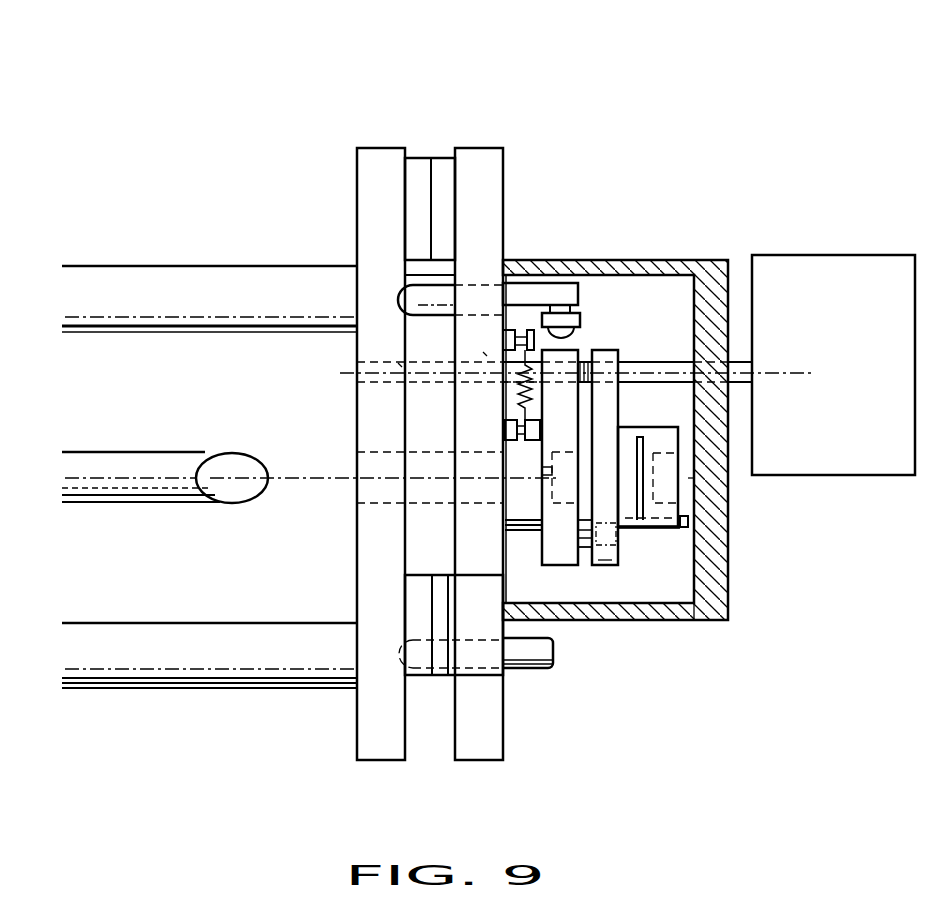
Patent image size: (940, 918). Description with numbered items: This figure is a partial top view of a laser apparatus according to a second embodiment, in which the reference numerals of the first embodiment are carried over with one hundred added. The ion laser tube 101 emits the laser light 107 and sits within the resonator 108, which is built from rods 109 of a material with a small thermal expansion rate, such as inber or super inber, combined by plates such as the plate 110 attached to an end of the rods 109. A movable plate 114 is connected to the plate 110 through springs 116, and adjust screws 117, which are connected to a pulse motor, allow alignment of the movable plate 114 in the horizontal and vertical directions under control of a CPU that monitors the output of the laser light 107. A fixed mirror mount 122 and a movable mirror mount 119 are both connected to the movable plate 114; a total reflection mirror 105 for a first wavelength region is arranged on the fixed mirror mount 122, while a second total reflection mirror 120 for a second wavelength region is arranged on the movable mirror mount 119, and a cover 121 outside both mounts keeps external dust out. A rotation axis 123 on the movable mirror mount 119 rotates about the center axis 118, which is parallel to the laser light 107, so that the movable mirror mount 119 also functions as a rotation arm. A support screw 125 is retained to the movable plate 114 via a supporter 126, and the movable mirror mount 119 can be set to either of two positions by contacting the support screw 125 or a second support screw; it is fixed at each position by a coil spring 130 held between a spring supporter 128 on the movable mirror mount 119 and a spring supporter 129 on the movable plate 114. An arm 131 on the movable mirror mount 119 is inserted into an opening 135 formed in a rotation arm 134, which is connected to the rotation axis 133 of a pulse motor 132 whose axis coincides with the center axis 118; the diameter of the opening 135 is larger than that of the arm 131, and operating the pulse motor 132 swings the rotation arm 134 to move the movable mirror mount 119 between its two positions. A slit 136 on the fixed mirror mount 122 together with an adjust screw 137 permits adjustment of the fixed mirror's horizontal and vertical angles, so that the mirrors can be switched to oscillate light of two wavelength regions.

The ion laser tube 101 is at (133, 450).
The total reflection mirror for first wavelength region 105 is at (688, 478).
The laser light 107 is at (98, 450).
The resonator 108 is at (82, 264).
The rods 109 is at (100, 264).
The plate 110 is at (380, 148).
The movable plate 114 is at (475, 148).
The springs 116 is at (430, 158).
The adjust screws 117 is at (512, 325).
The center axis 118 is at (400, 365).
The movable mirror mount 119 is at (548, 485).
The second total reflection mirror 120 is at (640, 537).
The cover 121 is at (553, 620).
The fixed mirror mount 122 is at (665, 527).
The rotation axis 123 is at (485, 355).
The support screw 125 is at (590, 310).
The supporter 126 is at (530, 283).
The spring supporter 128 is at (503, 440).
The spring supporter 129 is at (526, 297).
The coil spring 130 is at (503, 400).
The arm 131 is at (583, 547).
The pulse motor 132 is at (850, 255).
The rotation axis 133 is at (635, 362).
The rotation arm 134 is at (610, 350).
The opening 135 is at (602, 565).
The slit 136 is at (697, 623).
The adjust screw 137 is at (690, 521).